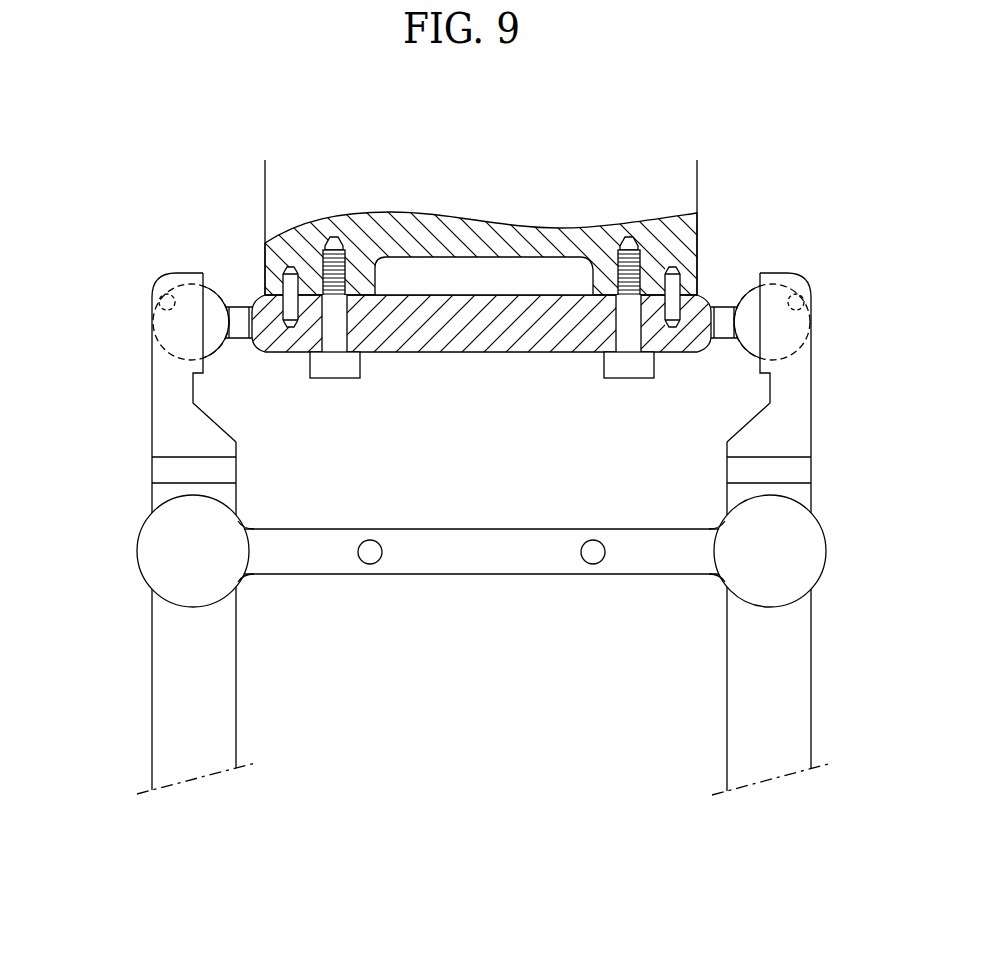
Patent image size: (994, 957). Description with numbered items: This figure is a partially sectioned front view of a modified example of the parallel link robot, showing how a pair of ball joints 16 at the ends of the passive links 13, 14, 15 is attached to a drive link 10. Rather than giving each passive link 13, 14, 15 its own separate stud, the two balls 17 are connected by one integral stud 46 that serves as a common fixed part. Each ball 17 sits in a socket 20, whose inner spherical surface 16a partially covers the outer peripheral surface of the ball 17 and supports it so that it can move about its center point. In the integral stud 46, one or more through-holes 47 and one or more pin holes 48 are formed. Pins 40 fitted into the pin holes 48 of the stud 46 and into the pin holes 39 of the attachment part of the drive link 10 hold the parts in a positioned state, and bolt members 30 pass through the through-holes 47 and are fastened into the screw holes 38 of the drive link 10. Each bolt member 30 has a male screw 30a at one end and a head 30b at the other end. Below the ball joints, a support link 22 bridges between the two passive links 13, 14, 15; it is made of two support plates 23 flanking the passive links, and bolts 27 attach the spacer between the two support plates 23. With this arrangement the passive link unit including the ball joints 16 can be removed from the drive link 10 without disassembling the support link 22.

The drive link 10 is at (378, 223).
The passive link 13 is at (473, 691).
The passive link 14 is at (196, 690).
The passive link 15 is at (770, 691).
The ball joint 16 is at (483, 355).
The inner spherical surface 16a is at (166, 298).
The ball 17 is at (200, 374).
The socket 20 is at (152, 330).
The support link 22 is at (481, 588).
The support plate 23 is at (482, 576).
The bolt 27 is at (370, 554).
The bolt member 30 is at (482, 309).
The male screw 30a is at (323, 262).
The head 30b is at (307, 368).
The screw hole 38 is at (336, 240).
The pin hole 39 is at (480, 288).
The pin 40 is at (290, 266).
The integral stud 46 is at (470, 354).
The through-hole 47 is at (332, 339).
The pin hole 48 is at (287, 324).